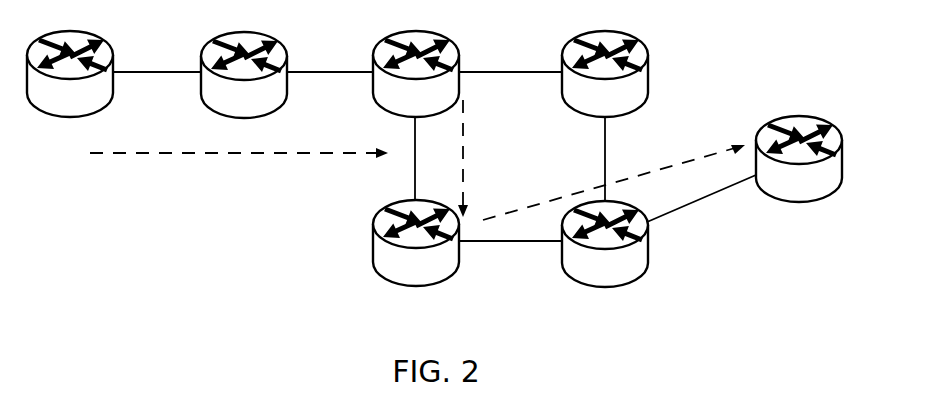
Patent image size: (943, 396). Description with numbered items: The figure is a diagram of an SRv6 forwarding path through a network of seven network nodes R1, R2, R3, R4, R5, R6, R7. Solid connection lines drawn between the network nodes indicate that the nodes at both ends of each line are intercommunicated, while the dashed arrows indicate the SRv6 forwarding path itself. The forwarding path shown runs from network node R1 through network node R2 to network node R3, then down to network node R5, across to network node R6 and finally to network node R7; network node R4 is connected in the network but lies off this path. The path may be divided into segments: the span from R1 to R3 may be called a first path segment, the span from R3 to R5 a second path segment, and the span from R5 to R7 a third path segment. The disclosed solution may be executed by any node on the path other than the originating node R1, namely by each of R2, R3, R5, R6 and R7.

The network node R1 is at (70, 88).
The network node R2 is at (244, 89).
The network node R3 is at (416, 86).
The network node R4 is at (605, 86).
The network node R5 is at (416, 257).
The network node R6 is at (605, 257).
The network node R7 is at (799, 172).